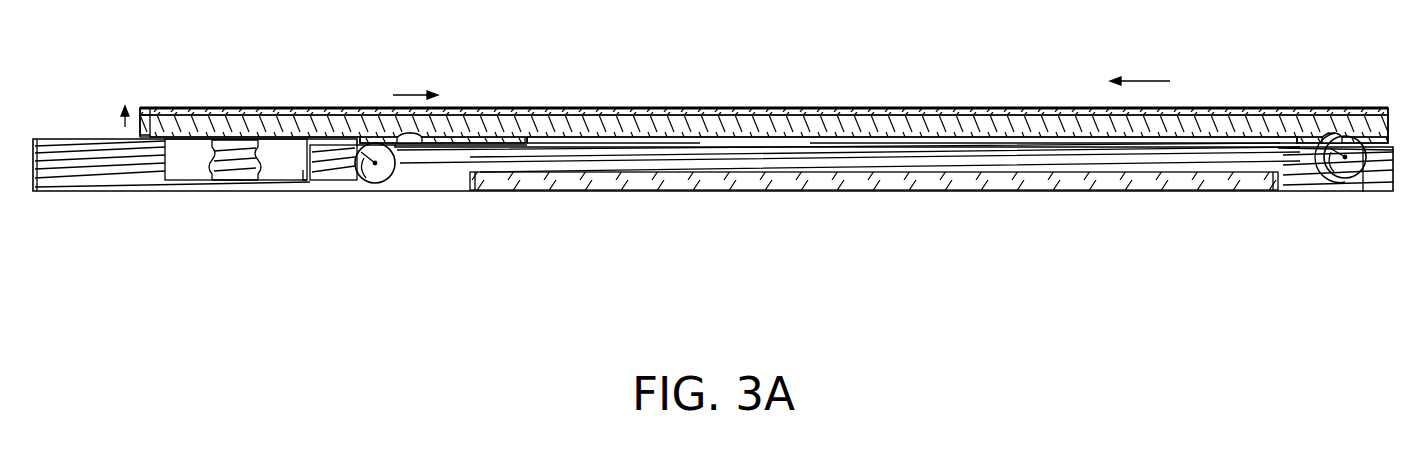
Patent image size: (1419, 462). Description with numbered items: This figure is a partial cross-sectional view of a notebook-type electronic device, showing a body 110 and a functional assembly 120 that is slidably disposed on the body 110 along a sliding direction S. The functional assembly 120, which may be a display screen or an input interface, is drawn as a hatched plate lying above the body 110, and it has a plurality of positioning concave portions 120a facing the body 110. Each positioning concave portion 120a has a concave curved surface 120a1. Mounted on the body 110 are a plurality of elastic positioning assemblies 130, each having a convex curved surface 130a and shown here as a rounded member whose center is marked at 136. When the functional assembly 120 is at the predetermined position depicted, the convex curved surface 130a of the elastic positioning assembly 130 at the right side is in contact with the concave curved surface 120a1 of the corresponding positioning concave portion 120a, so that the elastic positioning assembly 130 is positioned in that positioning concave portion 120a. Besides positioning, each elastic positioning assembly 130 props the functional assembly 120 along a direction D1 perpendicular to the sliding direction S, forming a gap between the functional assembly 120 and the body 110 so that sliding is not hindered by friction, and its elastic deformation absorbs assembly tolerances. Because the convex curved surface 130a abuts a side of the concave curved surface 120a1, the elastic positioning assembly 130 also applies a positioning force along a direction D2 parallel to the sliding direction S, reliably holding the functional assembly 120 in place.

The body 110 is at (107, 175).
The functional assembly 120 is at (223, 108).
The positioning concave portion 120a is at (372, 108).
The concave curved surface 120a1 is at (372, 108).
The elastic positioning assembly 130 is at (382, 178).
The roller shaft 136 is at (854, 156).
The convex curved surface 130a is at (362, 180).
The direction D1 is at (121, 125).
The direction D2 is at (408, 93).
The sliding direction S is at (1148, 80).